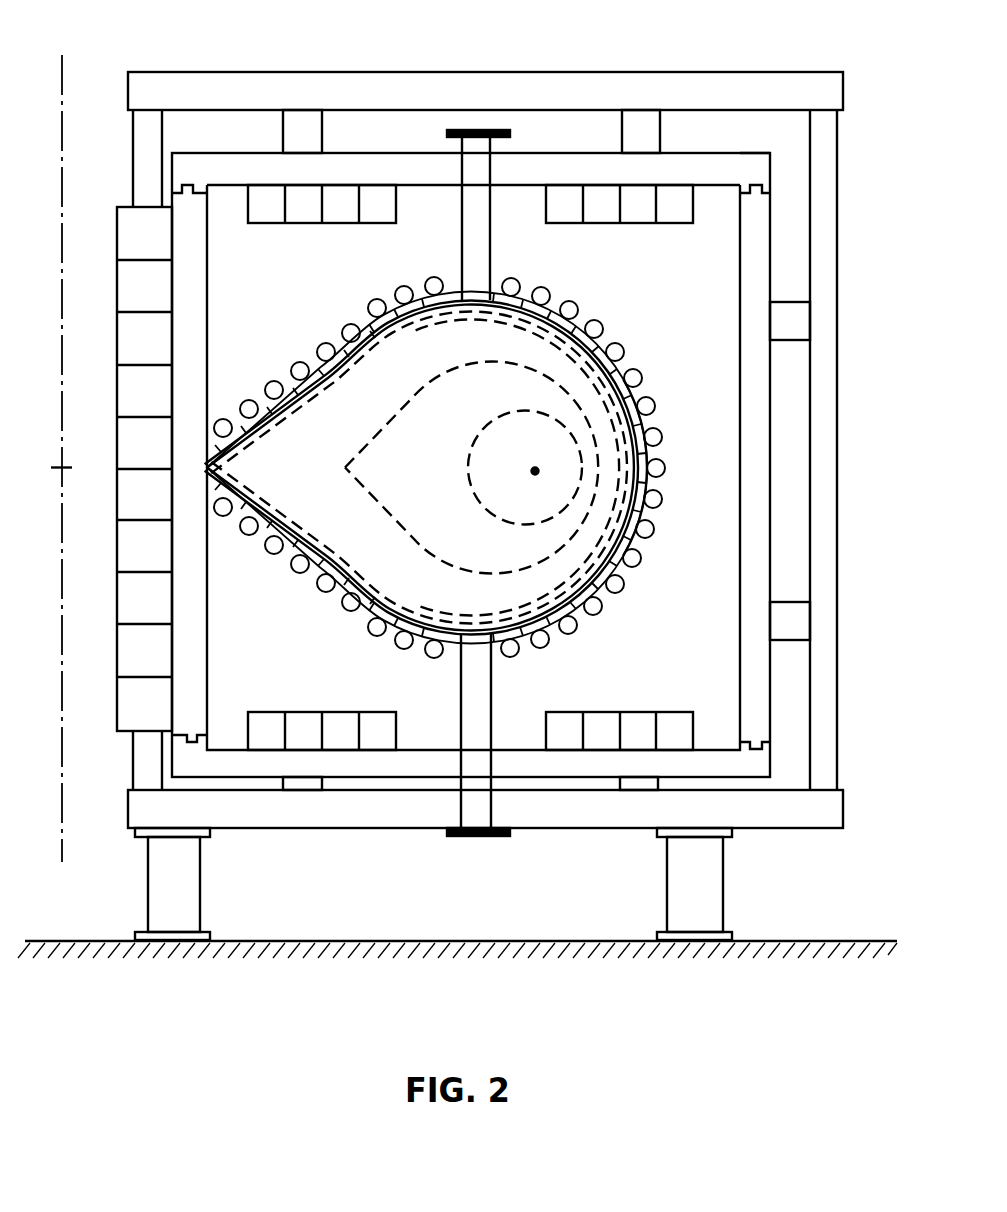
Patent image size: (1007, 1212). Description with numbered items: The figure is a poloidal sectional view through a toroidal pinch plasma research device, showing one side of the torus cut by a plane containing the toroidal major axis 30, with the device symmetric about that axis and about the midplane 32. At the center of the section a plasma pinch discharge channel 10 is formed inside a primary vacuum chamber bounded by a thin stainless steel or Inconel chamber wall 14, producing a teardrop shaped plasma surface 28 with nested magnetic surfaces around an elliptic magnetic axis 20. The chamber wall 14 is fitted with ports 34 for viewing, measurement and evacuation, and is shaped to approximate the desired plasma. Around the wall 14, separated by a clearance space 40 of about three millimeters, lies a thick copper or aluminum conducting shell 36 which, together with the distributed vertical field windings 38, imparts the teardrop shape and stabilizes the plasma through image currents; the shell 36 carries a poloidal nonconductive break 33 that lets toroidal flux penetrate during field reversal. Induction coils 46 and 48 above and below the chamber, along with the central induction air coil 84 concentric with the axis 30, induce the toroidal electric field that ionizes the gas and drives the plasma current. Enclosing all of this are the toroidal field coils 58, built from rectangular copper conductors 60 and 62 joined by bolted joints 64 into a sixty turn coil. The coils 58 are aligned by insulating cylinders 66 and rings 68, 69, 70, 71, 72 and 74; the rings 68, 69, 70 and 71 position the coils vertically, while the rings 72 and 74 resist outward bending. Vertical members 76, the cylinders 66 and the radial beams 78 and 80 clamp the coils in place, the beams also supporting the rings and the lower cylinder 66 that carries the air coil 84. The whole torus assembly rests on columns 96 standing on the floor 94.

The pinch discharge channel 10 is at (533, 456).
The chamber wall 14 is at (640, 397).
The elliptic magnetic axis 20 is at (534, 473).
The plasma surface 28 is at (268, 447).
The toroidal major axis 30 is at (66, 80).
The midplane 32 is at (110, 468).
The poloidal electrically nonconductive break 33 is at (652, 466).
The ports 34 is at (478, 840).
The conducting shell 36 is at (600, 326).
The vertical field windings 38 is at (367, 315).
The clearance space 40 is at (634, 360).
The induction coil 46 is at (600, 225).
The induction coil 48 is at (604, 713).
The toroidal field coils 58 is at (736, 152).
The copper conductor 60 is at (567, 778).
The copper conductor 62 is at (758, 702).
The bolted joints 64 is at (767, 742).
The cylinders 66 is at (134, 768).
The ring 68 is at (307, 117).
The ring 69 is at (648, 117).
The ring 70 is at (302, 792).
The ring 71 is at (632, 793).
The ring 72 is at (800, 318).
The ring 74 is at (800, 618).
The vertical members 76 is at (826, 770).
The radial beam 78 is at (838, 92).
The radial beam 80 is at (398, 829).
The induction air coil 84 is at (114, 604).
The ground 94 is at (487, 1004).
The columns 96 is at (723, 886).